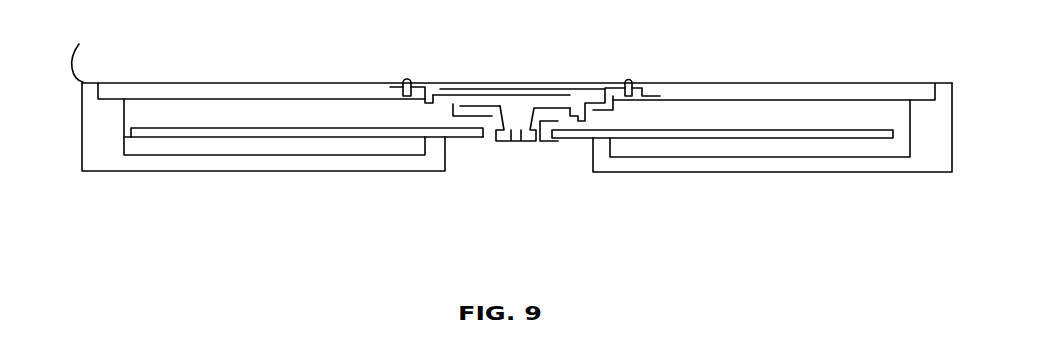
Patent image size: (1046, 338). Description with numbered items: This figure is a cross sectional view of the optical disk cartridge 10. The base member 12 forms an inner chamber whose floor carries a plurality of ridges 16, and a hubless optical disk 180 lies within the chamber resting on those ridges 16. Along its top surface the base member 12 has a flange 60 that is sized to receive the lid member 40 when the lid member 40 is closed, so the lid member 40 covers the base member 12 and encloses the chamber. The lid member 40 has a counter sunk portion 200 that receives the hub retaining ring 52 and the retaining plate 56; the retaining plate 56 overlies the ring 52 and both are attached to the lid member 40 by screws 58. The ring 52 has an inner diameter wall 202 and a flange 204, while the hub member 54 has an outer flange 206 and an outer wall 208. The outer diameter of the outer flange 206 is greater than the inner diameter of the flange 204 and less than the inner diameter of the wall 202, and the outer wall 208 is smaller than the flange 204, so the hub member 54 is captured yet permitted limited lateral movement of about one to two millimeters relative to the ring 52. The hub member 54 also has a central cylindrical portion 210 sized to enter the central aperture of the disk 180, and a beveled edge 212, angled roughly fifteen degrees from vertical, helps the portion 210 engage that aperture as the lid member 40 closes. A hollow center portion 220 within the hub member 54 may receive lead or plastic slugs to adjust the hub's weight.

The optical disk cartridge 10 is at (282, 239).
The base member 12 is at (117, 173).
The ridges 16 is at (239, 146).
The lid member 40 is at (159, 82).
The hub retaining ring 52 is at (420, 113).
The hub member 54 is at (575, 103).
The retaining plate 56 is at (516, 110).
The screws 58 is at (405, 80).
The flange 60 is at (88, 51).
The hubless optical disk 180 is at (191, 133).
The counter sunk portion 200 is at (420, 95).
The inner diameter wall 202 is at (430, 88).
The flange 204 is at (430, 125).
The outer flange 206 is at (440, 93).
The outer wall 208 is at (460, 106).
The central cylindrical portion 210 is at (542, 143).
The beveled edge 212 is at (496, 141).
The hollow center portion 220 is at (547, 108).